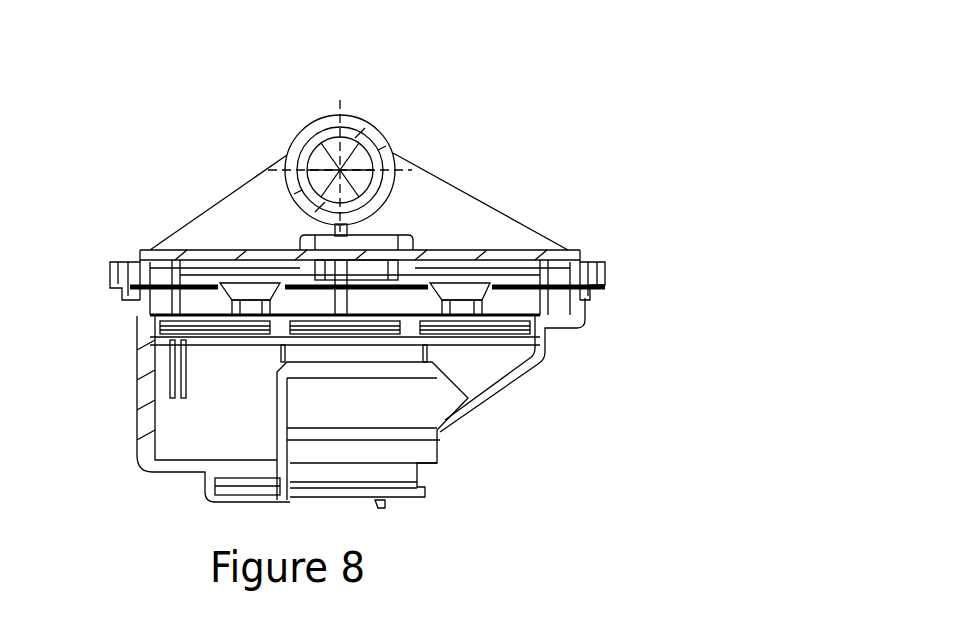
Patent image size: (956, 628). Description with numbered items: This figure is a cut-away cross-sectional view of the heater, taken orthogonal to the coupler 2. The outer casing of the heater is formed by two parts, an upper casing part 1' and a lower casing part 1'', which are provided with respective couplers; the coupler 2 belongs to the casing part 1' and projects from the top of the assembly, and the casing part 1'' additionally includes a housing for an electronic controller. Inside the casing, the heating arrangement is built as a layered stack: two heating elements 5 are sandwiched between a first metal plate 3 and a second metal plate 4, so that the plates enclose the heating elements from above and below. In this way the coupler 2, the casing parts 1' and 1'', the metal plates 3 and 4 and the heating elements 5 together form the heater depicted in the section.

The casing part 1' is at (372, 206).
The casing part 1'' is at (321, 437).
The coupler 2 is at (362, 107).
The metal plate 3 is at (533, 267).
The metal plate 4 is at (530, 302).
The heating element 5 is at (270, 298).